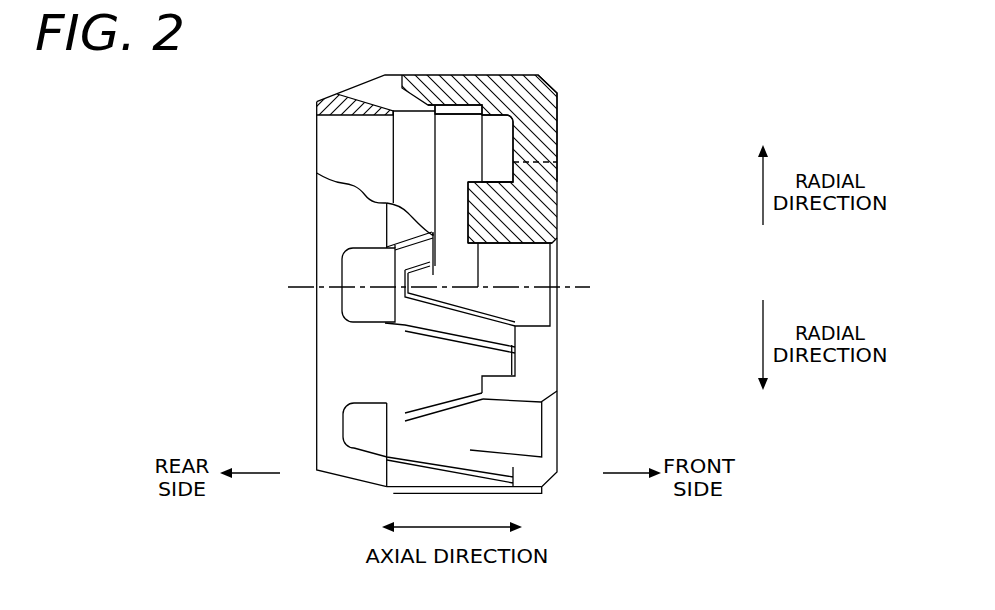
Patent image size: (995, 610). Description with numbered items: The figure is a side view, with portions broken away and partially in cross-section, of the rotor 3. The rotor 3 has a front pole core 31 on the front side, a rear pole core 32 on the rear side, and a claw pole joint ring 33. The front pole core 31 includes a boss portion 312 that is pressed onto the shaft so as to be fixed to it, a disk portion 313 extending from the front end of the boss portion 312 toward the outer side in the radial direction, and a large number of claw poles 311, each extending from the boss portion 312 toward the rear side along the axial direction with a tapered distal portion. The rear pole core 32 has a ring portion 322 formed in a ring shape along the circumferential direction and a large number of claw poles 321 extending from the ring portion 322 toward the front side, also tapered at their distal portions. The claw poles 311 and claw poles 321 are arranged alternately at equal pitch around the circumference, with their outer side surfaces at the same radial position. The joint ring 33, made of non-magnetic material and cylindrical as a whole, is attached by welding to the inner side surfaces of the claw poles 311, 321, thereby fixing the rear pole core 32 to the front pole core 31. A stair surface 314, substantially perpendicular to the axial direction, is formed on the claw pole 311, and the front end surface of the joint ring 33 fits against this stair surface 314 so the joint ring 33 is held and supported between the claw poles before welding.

The rotor 3 is at (250, 160).
The front pole core 31 is at (562, 97).
The rear pole core 32 is at (314, 97).
The claw pole joint ring 33 is at (452, 106).
The claw pole 311 is at (452, 107).
The boss portion 312 is at (532, 220).
The disk portion 313 is at (545, 128).
The stair surface 314 is at (478, 117).
The claw pole 321 is at (378, 92).
The ring portion 322 is at (338, 103).